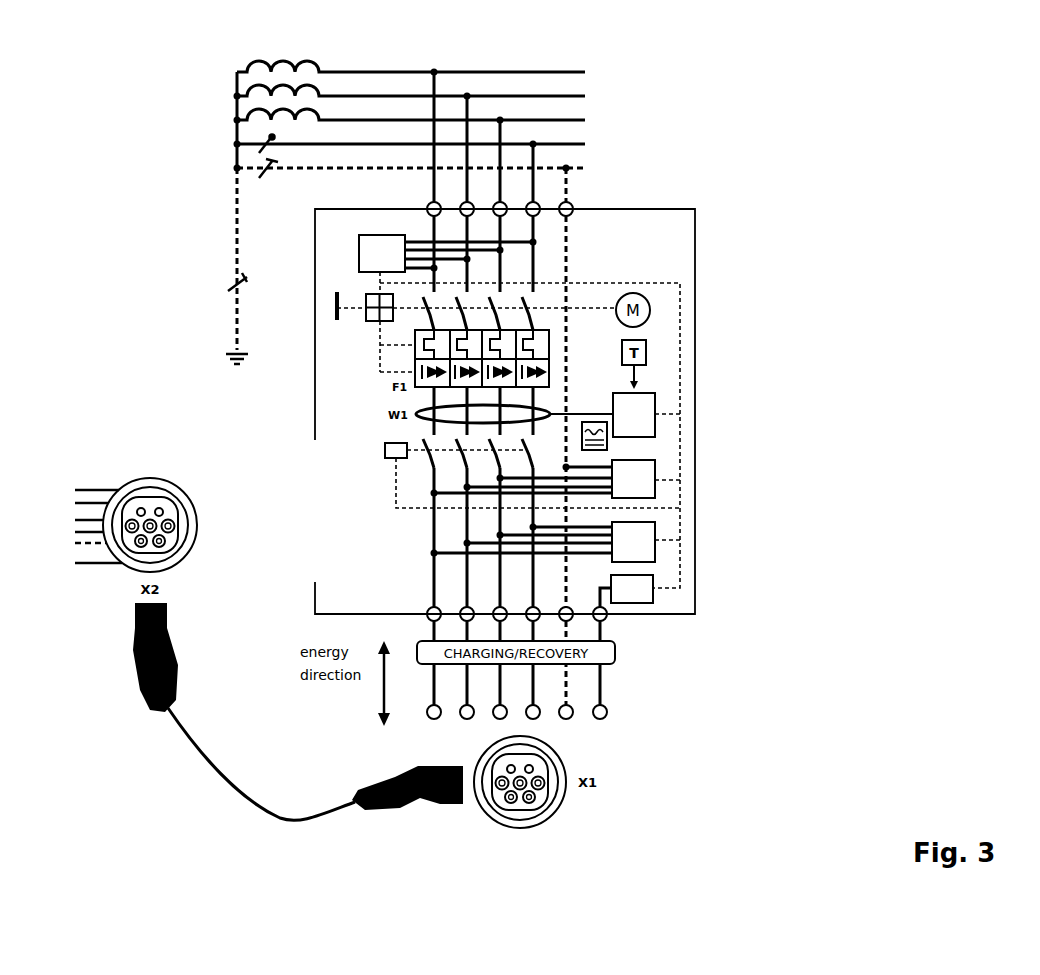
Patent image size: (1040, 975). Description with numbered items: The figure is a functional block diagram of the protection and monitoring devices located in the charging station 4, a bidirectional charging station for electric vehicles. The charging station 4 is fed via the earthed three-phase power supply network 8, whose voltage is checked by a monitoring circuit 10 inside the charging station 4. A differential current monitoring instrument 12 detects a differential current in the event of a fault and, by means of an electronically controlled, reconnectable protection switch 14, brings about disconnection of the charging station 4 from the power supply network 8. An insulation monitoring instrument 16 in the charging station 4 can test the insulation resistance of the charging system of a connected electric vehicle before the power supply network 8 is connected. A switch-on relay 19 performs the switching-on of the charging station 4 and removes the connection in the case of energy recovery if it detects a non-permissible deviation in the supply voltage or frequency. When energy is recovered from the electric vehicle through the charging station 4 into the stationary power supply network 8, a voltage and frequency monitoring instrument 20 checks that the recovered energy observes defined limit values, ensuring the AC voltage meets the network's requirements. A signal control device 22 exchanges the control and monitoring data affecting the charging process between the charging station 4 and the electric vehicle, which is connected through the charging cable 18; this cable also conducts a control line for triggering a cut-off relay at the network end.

The charging station 4 is at (668, 203).
The power supply network 8 is at (237, 103).
The monitoring circuit 10 is at (360, 247).
The differential current monitoring instrument 12 is at (640, 405).
The protection switch 14 is at (338, 305).
The insulation monitoring instrument 16 is at (645, 472).
The charging cable 18 is at (183, 737).
The switch-on relay 19 is at (395, 450).
The voltage and frequency monitoring instrument 20 is at (640, 537).
The signal control device 22 is at (640, 593).